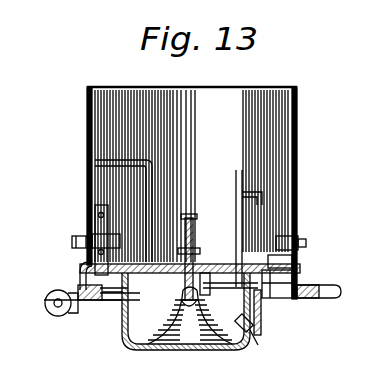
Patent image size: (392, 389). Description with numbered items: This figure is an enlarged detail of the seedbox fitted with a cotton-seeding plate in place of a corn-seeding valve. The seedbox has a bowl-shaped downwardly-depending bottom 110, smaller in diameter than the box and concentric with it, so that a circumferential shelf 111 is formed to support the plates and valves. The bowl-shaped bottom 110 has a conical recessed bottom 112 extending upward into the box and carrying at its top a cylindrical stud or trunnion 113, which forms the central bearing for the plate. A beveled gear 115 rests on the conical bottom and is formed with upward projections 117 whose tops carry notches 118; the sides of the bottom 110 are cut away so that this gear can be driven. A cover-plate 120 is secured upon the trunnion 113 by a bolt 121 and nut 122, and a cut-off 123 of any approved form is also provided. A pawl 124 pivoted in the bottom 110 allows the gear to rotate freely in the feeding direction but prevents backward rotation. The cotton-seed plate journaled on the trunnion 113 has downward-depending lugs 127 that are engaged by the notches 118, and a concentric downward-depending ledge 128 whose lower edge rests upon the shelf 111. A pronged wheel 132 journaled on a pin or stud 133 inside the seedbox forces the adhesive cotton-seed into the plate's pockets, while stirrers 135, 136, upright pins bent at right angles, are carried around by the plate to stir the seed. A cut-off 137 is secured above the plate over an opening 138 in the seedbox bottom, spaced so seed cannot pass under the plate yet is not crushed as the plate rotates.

The bowl-shaped bottom 110 is at (133, 318).
The circumferential shelf 111 is at (113, 303).
The recessed bottom 112 is at (172, 347).
The cylindrical stud or trunnion 113 is at (197, 265).
The beveled gear 115 is at (251, 327).
The upward projections 117 is at (272, 285).
The notches 118 is at (261, 248).
The cover-plate 120 is at (164, 233).
The bolt 121 is at (192, 234).
The nut 122 is at (186, 248).
The cut-off 123 is at (172, 180).
The pawl 124 is at (130, 305).
The downward-depending lugs 127 is at (208, 276).
The downward-depending ledge 128 is at (100, 313).
The wheel 132 is at (93, 222).
The pin or stud 133 is at (75, 240).
The stirrer 135 is at (152, 163).
The stirrer 136 is at (240, 172).
The cut-off 137 is at (296, 240).
The opening 138 is at (280, 292).